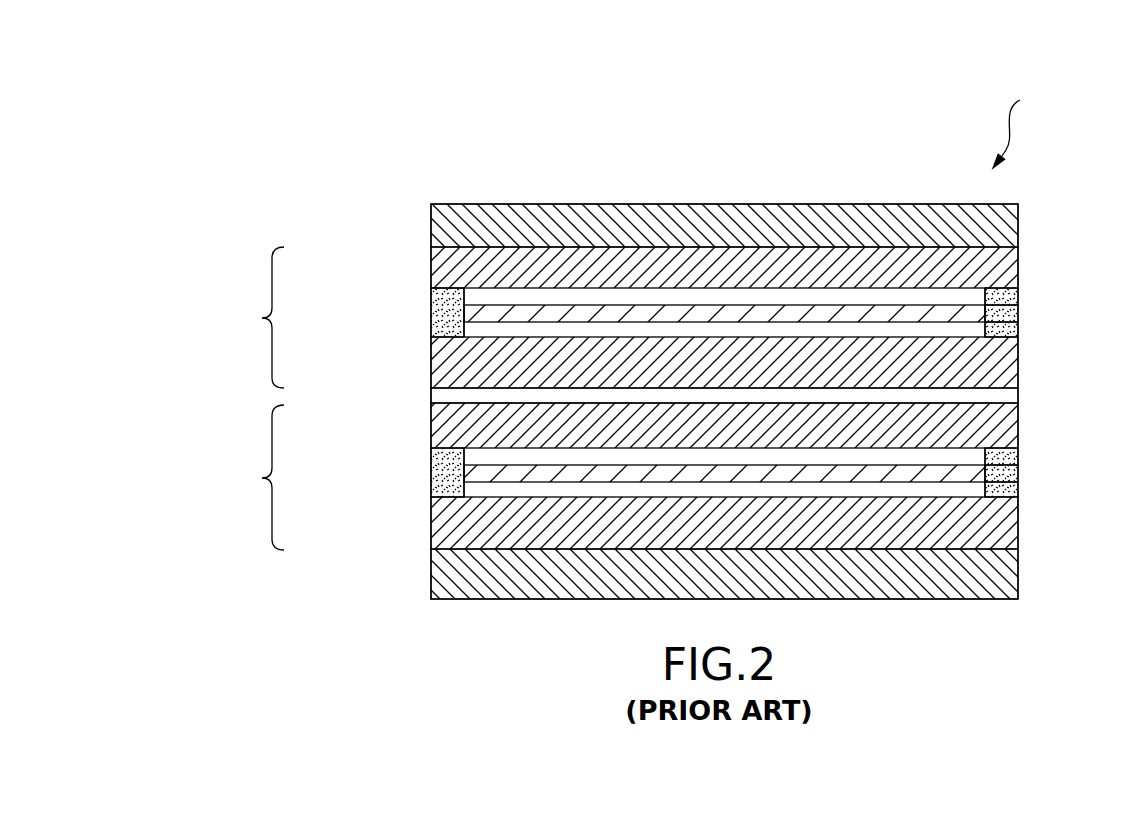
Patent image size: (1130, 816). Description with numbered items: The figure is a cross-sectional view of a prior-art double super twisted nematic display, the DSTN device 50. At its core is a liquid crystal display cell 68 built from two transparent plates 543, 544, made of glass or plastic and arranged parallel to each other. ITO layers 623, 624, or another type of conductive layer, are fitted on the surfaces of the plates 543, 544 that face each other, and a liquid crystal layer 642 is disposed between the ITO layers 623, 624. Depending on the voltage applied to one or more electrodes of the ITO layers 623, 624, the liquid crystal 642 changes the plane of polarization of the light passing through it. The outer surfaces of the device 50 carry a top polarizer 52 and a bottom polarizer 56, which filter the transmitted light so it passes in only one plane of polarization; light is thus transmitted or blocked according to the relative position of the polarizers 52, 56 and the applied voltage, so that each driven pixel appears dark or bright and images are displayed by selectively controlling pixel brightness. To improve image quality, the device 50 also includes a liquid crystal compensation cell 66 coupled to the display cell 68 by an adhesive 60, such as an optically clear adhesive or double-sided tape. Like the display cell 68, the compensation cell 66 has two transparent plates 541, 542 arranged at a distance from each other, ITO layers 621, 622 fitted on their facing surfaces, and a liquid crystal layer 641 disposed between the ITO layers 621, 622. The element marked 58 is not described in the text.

The DSTN device 50 is at (1020, 125).
The top polarizer 52 is at (474, 213).
The transparent plate 541 is at (453, 264).
The transparent plate 542 is at (453, 368).
The transparent plate 543 is at (453, 436).
The transparent plate 544 is at (453, 529).
The bottom polarizer 56 is at (480, 599).
The liquid crystal layer 58 is at (452, 314).
The adhesive 60 is at (1005, 399).
The ITO layer 621 is at (977, 300).
The ITO layer 622 is at (977, 332).
The ITO layer 623 is at (975, 462).
The ITO layer 624 is at (968, 493).
The liquid crystal layer 641 is at (977, 323).
The liquid crystal layer 642 is at (975, 482).
The liquid crystal compensation cell 66 is at (257, 317).
The liquid crystal display cell 68 is at (256, 477).